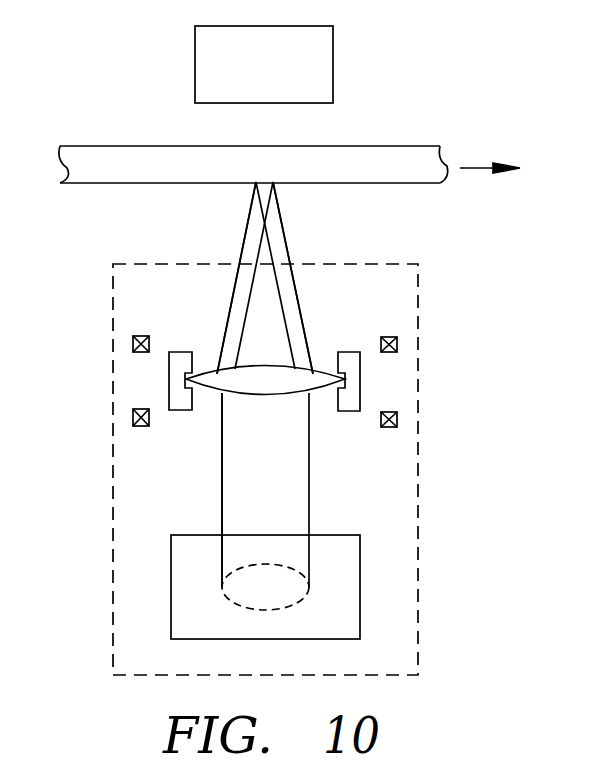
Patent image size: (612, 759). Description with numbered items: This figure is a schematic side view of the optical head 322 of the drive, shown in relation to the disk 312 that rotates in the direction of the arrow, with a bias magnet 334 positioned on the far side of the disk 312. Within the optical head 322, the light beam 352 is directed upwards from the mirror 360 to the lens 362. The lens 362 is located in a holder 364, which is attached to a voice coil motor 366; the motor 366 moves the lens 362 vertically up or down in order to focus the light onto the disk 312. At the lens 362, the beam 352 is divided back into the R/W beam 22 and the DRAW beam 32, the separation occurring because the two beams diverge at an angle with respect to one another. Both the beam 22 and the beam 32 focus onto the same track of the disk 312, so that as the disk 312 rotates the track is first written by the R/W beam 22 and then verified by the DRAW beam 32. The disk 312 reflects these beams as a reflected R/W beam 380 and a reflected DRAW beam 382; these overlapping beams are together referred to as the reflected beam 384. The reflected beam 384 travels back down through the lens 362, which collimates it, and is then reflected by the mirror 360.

The bias magnet 334 is at (333, 57).
The disk 312 is at (388, 146).
The R/W beam 22 is at (248, 219).
The DRAW beam 32 is at (282, 219).
The reflected R/W beam 380 is at (240, 252).
The reflected DRAW beam 382 is at (292, 252).
The optical head 322 is at (112, 332).
The voice coil motor 366 is at (136, 353).
The holder 364 is at (178, 351).
The lens 362 is at (210, 393).
The light beam 352 is at (309, 475).
The reflected beam 384 is at (222, 495).
The mirror 360 is at (361, 580).